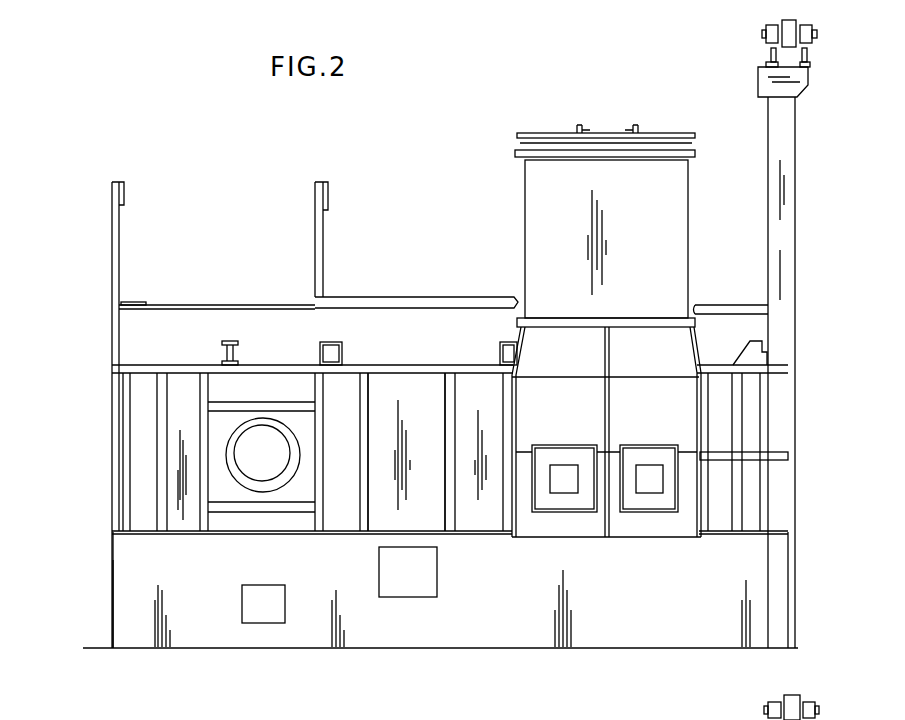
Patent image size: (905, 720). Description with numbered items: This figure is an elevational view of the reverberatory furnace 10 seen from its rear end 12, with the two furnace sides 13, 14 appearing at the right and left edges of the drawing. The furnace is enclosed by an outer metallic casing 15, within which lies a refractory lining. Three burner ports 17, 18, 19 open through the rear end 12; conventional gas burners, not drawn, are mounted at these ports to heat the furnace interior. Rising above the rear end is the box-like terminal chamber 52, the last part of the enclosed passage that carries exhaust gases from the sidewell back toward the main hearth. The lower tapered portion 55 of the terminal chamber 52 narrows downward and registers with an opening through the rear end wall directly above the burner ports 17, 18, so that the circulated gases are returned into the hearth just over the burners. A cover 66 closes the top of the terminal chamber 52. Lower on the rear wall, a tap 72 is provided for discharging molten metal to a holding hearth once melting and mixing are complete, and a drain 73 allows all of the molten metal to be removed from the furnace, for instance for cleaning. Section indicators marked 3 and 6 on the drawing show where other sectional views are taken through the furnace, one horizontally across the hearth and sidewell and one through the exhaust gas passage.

The reverberatory furnace 10 is at (75, 241).
The rear end 12 is at (130, 567).
The furnace side 13 is at (798, 597).
The furnace side 14 is at (110, 594).
The outer metallic casing 15 is at (415, 393).
The burner port 17 is at (647, 475).
The burner port 18 is at (562, 475).
The burner port 19 is at (280, 455).
The terminal chamber 52 is at (670, 209).
The lower tapered portion 55 is at (533, 397).
The tank lid / cover 66 is at (684, 143).
The tap 72 is at (425, 579).
The drain 73 is at (272, 603).
The section line 3- 3 is at (104, 453).
The section line 6- 6 is at (605, 101).